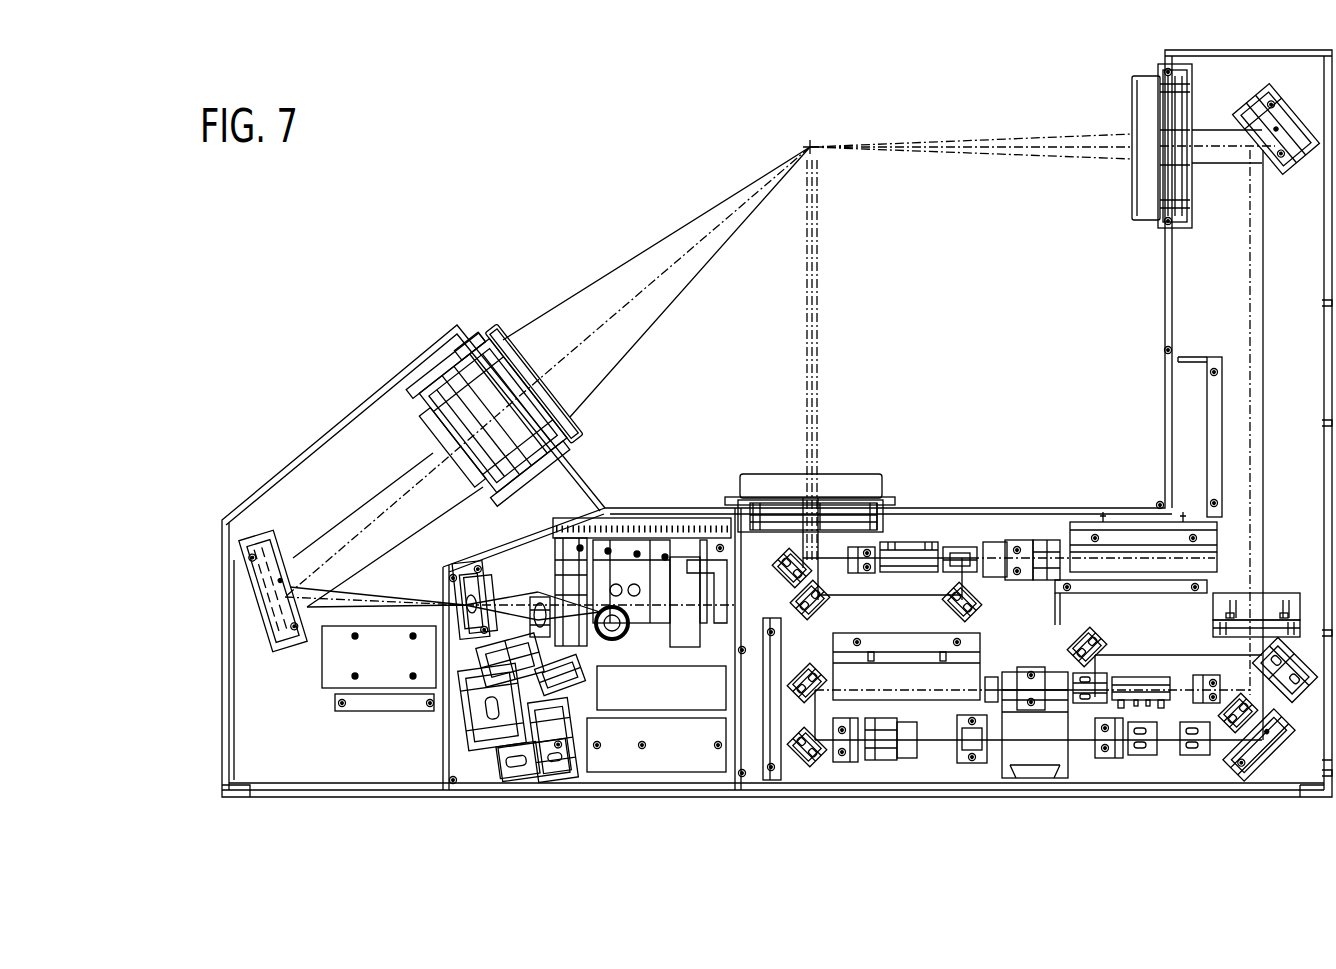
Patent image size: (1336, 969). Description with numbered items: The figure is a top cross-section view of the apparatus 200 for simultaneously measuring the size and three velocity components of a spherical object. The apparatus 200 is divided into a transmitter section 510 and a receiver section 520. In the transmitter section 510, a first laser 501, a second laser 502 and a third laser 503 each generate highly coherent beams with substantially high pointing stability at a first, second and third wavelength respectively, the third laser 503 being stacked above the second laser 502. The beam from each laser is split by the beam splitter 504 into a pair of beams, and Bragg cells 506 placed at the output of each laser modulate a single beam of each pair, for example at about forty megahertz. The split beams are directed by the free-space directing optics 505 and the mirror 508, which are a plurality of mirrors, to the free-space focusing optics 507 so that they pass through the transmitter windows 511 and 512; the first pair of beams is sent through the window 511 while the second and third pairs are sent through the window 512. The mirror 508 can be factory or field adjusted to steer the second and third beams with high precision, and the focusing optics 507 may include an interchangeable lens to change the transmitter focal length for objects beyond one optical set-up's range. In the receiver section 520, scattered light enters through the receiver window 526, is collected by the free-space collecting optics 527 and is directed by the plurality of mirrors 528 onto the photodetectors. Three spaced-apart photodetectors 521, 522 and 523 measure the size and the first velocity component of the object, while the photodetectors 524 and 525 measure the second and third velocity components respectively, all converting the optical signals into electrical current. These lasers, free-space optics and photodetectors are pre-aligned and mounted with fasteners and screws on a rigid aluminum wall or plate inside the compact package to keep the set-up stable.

The apparatus 200 is at (606, 180).
The first laser 501 is at (1083, 530).
The second laser 502 is at (940, 655).
The third laser 503 is at (977, 650).
The beam splitter 504 is at (953, 547).
The free-space directing optics 505 is at (1063, 523).
The Bragg cell 506 is at (1153, 673).
The free-space focusing optics 507 is at (1158, 70).
The mirror 508 is at (1293, 111).
The transmitter section 510 is at (960, 400).
The transmitter window 511 is at (867, 473).
The transmitter window 512 is at (1131, 75).
The receiver section 520 is at (703, 390).
The photodetector 521 is at (565, 563).
The photodetector 522 is at (600, 590).
The photodetector 523 is at (667, 567).
The photodetector 524 is at (508, 617).
The photodetector 525 is at (585, 738).
The receiver window 526 is at (498, 320).
The free-space collecting optics 527 is at (417, 390).
The mirrors 528 is at (260, 530).